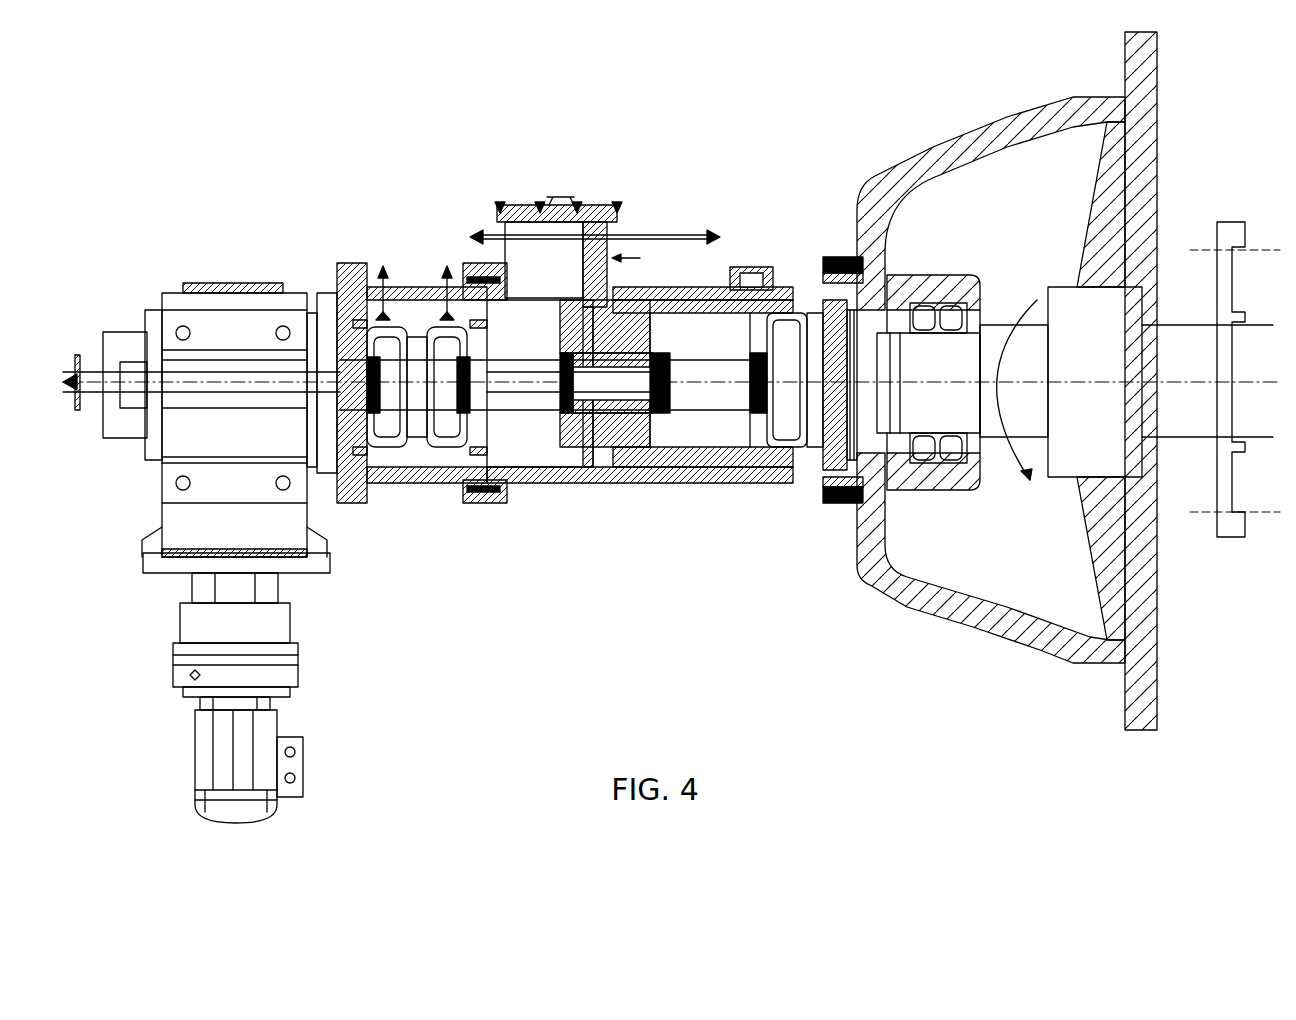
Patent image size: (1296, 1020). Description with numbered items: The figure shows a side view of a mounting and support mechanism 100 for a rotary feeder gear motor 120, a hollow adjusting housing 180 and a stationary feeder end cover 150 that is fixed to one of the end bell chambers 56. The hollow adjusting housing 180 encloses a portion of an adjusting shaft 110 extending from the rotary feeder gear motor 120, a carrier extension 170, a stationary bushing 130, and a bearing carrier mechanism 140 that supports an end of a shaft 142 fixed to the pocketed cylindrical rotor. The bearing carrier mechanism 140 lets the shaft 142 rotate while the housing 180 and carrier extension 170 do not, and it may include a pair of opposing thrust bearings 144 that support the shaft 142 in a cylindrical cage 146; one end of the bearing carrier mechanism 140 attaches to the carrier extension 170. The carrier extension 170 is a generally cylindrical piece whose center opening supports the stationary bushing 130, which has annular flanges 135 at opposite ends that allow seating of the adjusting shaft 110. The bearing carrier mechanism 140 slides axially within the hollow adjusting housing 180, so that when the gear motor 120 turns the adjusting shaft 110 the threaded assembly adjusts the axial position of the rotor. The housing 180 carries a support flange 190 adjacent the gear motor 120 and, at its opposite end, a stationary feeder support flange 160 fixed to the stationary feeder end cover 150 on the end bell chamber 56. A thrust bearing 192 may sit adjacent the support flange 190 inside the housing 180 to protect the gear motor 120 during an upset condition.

The mounting and support mechanism 100 is at (1068, 381).
The end bell chamber 56 is at (965, 150).
The adjusting shaft 110 is at (218, 370).
The rotary feeder gear motor 120 is at (178, 490).
The stationary bushing 130 is at (593, 448).
The annular flange 135 is at (670, 356).
The bearing carrier mechanism 140 is at (822, 492).
The shaft 142 is at (1075, 382).
The thrust bearing 144 is at (703, 415).
The cylindrical cage 146 is at (795, 282).
The stationary feeder end cover 150 is at (940, 285).
The stationary feeder support flange 160 is at (830, 255).
The carrier extension 170 is at (595, 332).
The hollow adjusting housing 180 is at (712, 282).
The support flange 190 is at (472, 265).
The thrust bearing 192 is at (403, 445).